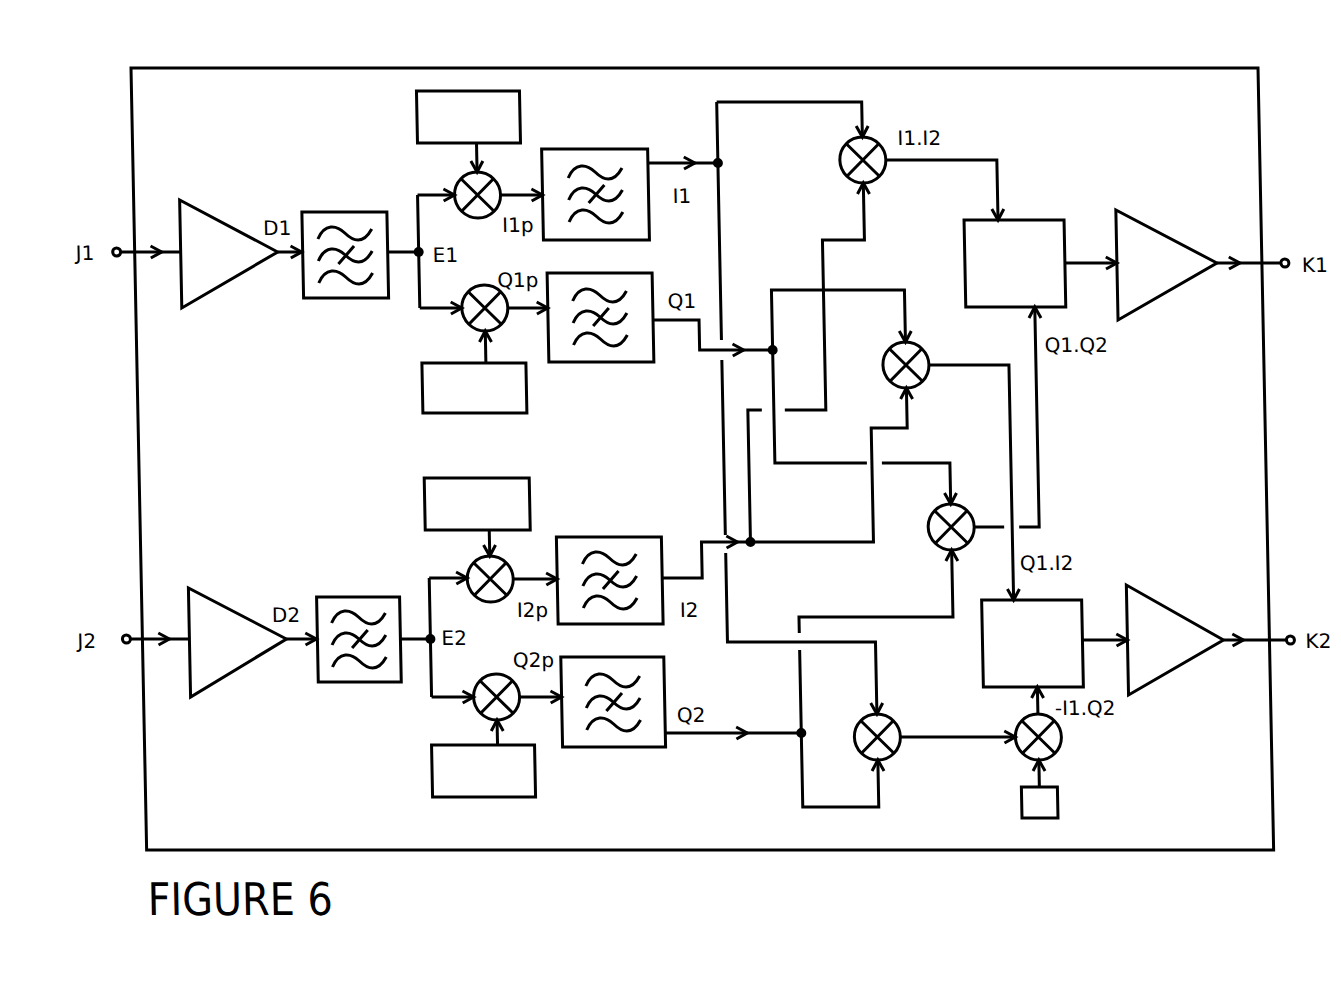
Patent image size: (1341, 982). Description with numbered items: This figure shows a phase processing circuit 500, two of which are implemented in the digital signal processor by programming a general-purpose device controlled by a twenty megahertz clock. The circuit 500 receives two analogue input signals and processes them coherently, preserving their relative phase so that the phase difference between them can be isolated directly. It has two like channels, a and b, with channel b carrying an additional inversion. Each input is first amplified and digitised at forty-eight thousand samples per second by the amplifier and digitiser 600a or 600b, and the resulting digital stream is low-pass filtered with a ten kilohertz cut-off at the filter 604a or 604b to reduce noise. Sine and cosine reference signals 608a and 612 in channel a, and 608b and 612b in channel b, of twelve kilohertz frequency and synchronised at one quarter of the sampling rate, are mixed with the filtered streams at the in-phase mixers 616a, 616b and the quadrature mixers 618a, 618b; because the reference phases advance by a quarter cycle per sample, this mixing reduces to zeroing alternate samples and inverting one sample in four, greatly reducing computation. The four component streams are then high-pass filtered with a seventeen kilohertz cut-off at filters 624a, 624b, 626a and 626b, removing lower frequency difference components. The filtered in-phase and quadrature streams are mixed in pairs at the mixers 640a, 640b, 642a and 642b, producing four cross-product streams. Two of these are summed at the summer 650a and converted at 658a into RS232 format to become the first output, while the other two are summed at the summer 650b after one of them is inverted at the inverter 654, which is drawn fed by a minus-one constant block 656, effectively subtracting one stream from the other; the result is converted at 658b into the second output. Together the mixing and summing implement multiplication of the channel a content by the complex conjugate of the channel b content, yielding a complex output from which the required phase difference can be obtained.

The phase processing circuit 500 is at (616, 853).
The amplifier and digitiser (channel a) 600a is at (207, 240).
The amplifier and digitiser (channel b) 600b is at (196, 673).
The low-pass filter (channel a) 604a is at (329, 287).
The low-pass filter (channel b) 604b is at (335, 668).
The quadrature reference signal (channel a) 608a is at (429, 102).
The quadrature reference signal (channel b) 608b is at (426, 518).
The quadrature reference signal (channel a) 612 is at (428, 400).
The quadrature reference signal (channel b) 612b is at (453, 783).
The in-phase mixer (channel a) 616a is at (453, 190).
The in-phase mixer (channel b) 616b is at (452, 573).
The quadrature mixer (channel a) 618a is at (460, 312).
The quadrature mixer (channel b) 618b is at (454, 703).
The high-pass filter (in-phase, channel a) 624a is at (603, 157).
The high-pass filter (in-phase, channel b) 624b is at (608, 547).
The high-pass filter (quadrature, channel a) 626a is at (617, 347).
The high-pass filter (quadrature, channel b) 626b is at (580, 732).
The mixer (in-phase pair) 640a is at (861, 143).
The mixer (in-phase/quadrature pair) 640b is at (877, 742).
The mixer (quadrature/in-phase pair) 642a is at (914, 368).
The mixer (quadrature pair) 642b is at (968, 523).
The summer (channel a output) 650a is at (1025, 227).
The summer (channel b output) 650b is at (980, 663).
The inverter 654 is at (1035, 742).
The -1 constant source 656 is at (1045, 807).
The RS232 converter (channel a) 658a is at (1139, 248).
The RS232 converter (channel b) 658b is at (1144, 615).